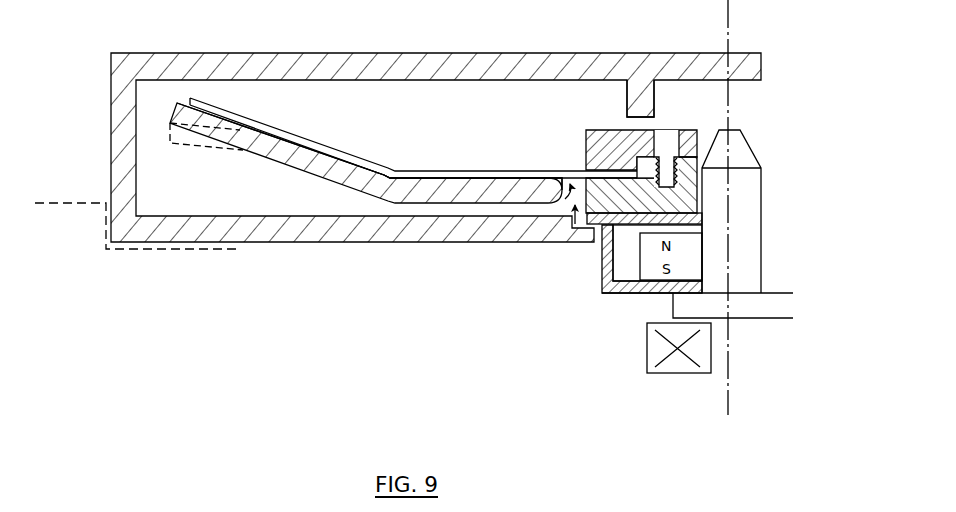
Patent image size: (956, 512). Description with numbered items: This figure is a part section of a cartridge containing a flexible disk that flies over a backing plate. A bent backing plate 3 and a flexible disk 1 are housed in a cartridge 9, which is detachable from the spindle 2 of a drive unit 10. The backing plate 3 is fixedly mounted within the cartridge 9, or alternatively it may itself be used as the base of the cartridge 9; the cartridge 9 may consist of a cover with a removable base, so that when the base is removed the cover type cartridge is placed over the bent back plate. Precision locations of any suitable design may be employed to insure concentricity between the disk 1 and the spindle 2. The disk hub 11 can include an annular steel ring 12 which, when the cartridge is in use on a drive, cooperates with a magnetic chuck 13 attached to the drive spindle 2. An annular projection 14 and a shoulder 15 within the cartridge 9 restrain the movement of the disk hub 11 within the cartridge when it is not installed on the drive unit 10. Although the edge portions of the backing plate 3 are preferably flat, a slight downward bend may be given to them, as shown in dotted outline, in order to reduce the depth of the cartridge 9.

The flexible disk 1 is at (323, 144).
The spindle 2 is at (740, 157).
The bent backing plate 3 is at (303, 160).
The cartridge 9 is at (112, 63).
The drive unit 10 is at (130, 245).
The disk hub 11 is at (571, 128).
The annular steel ring 12 is at (610, 224).
The magnetic chuck 13 is at (600, 299).
The annular projection 14 is at (627, 102).
The shoulder 15 is at (572, 226).